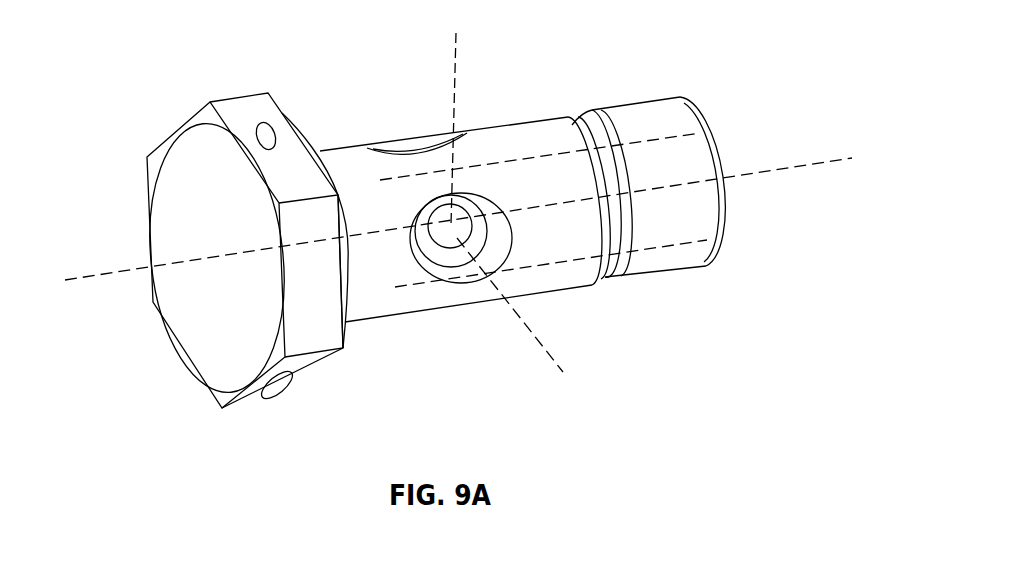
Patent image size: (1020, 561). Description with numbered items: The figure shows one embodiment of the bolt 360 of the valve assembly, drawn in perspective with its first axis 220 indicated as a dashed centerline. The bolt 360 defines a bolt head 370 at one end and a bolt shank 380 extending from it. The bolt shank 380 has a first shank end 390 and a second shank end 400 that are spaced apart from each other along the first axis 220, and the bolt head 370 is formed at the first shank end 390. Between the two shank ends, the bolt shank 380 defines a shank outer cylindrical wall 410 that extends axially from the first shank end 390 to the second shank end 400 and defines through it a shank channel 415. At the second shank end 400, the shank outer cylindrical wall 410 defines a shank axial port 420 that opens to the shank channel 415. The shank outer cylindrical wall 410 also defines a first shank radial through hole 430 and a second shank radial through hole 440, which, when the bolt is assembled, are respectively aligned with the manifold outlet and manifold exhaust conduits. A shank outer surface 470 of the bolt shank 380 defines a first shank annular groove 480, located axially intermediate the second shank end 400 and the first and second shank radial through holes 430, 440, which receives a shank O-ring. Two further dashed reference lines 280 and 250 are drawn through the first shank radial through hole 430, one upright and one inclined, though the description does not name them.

The first axis 220 is at (826, 163).
The port axis 250 is at (550, 356).
The vertical axis 280 is at (452, 55).
The bolt 360 is at (133, 80).
The bolt head 370 is at (207, 348).
The bolt shank 380 is at (352, 148).
The first shank end 390 is at (357, 322).
The second shank end 400 is at (652, 268).
The shank outer cylindrical wall 410 is at (563, 279).
The shank channel 415 is at (745, 212).
The shank axial port 420 is at (686, 98).
The first shank radial through hole 430 is at (463, 205).
The second shank radial through hole 440 is at (427, 143).
The shank outer surface 470 is at (699, 240).
The first shank annular groove 480 is at (572, 125).